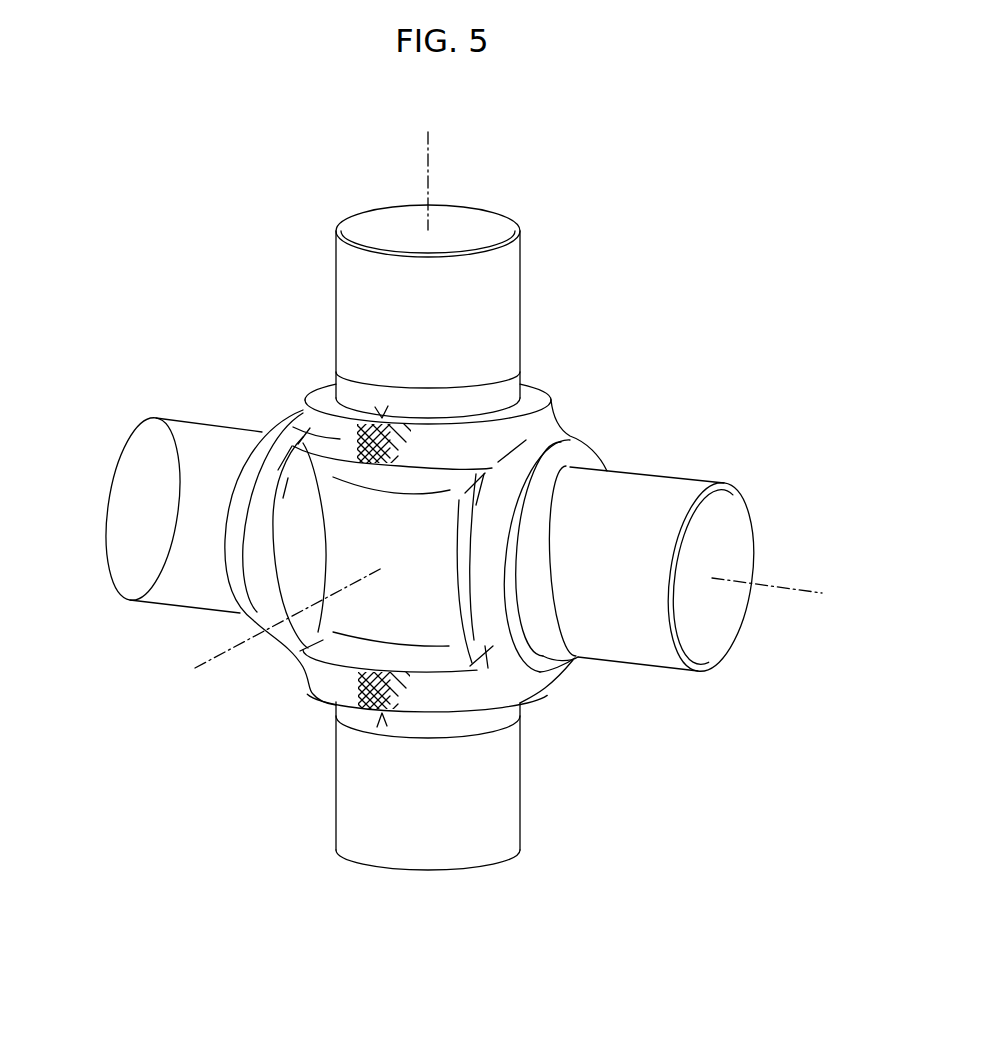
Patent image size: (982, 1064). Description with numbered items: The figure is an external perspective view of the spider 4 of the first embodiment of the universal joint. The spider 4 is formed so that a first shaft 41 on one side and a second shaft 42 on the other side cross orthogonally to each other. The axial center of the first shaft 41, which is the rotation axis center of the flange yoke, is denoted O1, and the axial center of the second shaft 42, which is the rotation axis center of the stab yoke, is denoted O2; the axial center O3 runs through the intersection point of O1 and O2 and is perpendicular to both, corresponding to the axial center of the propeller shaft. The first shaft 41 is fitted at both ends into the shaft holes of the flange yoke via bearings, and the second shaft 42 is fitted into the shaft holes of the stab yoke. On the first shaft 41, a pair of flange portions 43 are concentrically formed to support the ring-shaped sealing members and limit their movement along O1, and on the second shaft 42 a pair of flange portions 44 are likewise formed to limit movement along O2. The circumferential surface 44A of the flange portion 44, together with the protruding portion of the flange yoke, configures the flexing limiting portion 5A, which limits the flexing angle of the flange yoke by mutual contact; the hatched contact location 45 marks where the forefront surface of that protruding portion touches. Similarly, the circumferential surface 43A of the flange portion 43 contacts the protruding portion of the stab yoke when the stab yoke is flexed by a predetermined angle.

The spider 4 is at (218, 305).
The first shaft 41 is at (153, 553).
The second shaft 42 is at (490, 307).
The flange portion 43 is at (247, 497).
The circumferential surface 43A is at (256, 587).
The flange portion 44 is at (533, 395).
The circumferential surface 44A is at (304, 432).
The contact location 45 is at (357, 427).
The flexing limiting portion 5A is at (382, 416).
The axial center O1 is at (715, 572).
The axial center O2 is at (427, 165).
The axial center O3 is at (272, 631).